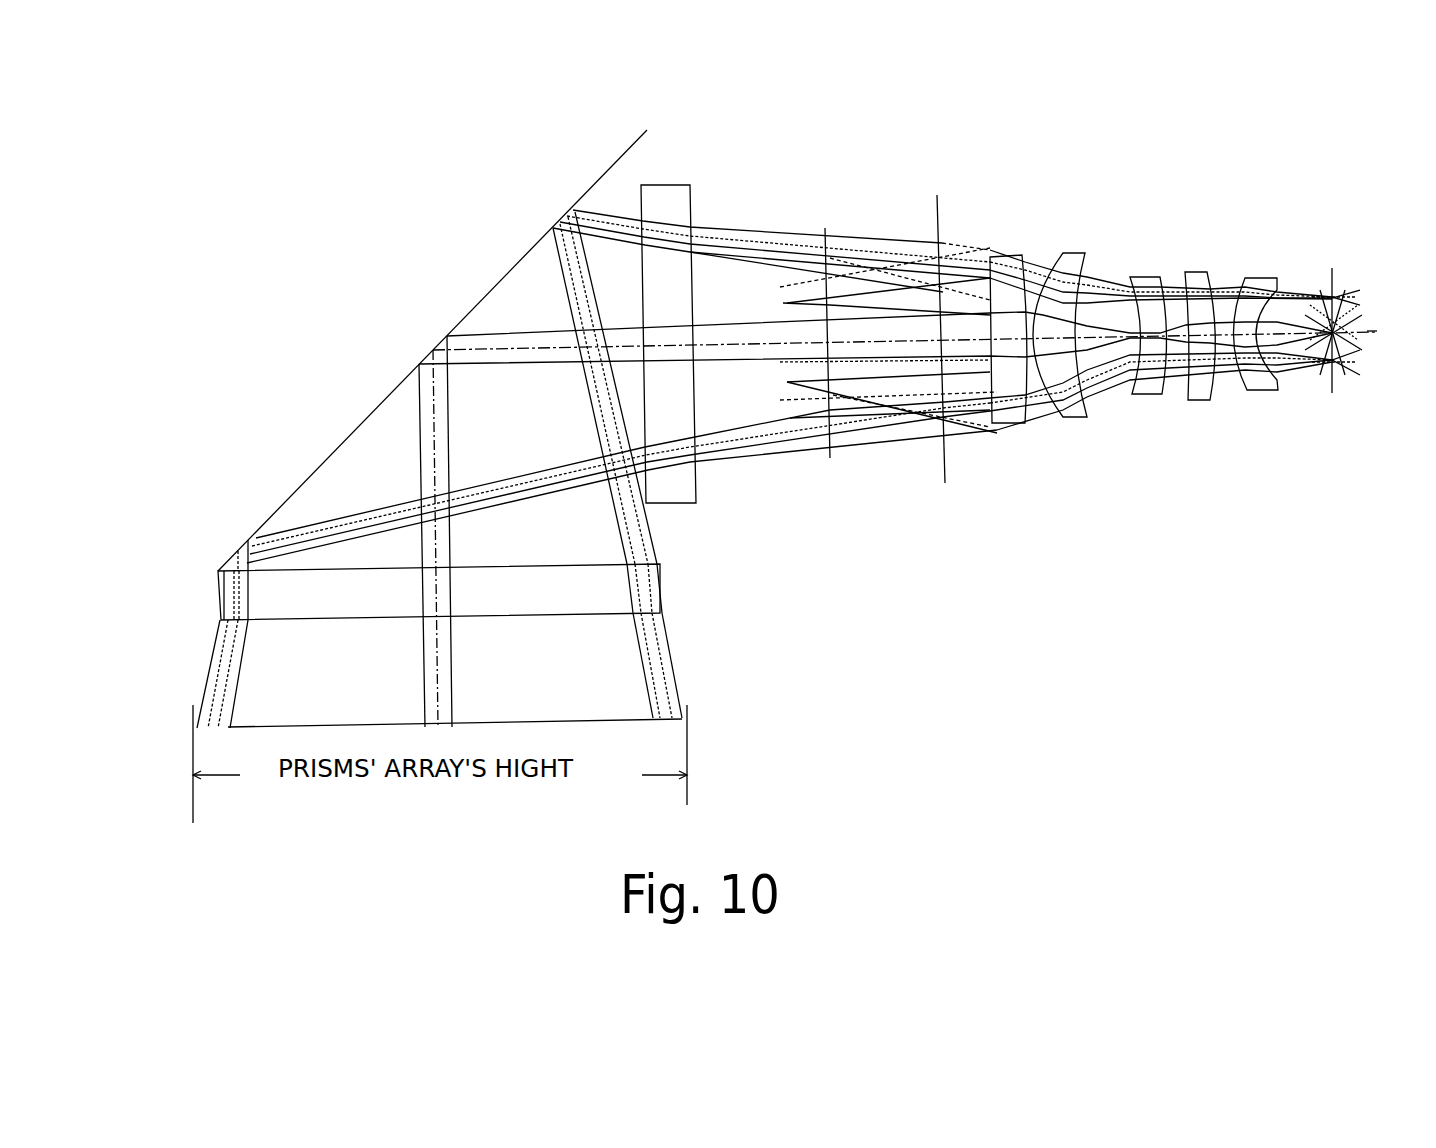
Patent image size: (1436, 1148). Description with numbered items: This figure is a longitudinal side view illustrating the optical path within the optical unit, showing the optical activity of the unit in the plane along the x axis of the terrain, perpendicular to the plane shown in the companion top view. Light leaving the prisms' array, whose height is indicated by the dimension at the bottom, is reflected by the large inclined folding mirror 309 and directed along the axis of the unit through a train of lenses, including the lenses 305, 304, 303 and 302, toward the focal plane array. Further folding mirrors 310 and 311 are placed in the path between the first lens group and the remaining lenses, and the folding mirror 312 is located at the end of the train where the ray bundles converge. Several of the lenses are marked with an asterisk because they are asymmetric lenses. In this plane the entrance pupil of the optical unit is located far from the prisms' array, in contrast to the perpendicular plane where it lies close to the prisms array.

The lens 302 is at (1262, 390).
The lens 303 is at (1198, 398).
The lens 304 is at (1140, 390).
The lens 305 is at (1075, 252).
The folding mirror 309 is at (390, 392).
The folding mirror 310 is at (825, 245).
The folding mirror 311 is at (938, 227).
The folding mirror 312 is at (1335, 290).